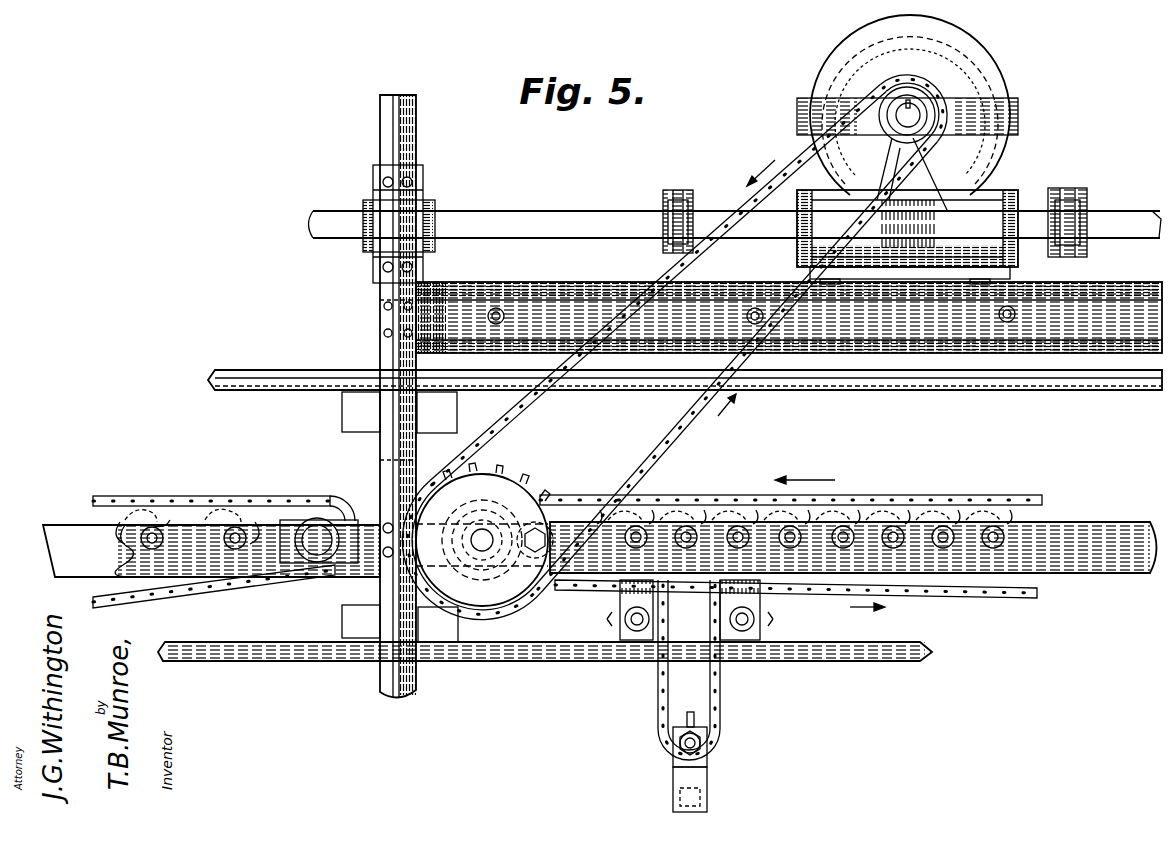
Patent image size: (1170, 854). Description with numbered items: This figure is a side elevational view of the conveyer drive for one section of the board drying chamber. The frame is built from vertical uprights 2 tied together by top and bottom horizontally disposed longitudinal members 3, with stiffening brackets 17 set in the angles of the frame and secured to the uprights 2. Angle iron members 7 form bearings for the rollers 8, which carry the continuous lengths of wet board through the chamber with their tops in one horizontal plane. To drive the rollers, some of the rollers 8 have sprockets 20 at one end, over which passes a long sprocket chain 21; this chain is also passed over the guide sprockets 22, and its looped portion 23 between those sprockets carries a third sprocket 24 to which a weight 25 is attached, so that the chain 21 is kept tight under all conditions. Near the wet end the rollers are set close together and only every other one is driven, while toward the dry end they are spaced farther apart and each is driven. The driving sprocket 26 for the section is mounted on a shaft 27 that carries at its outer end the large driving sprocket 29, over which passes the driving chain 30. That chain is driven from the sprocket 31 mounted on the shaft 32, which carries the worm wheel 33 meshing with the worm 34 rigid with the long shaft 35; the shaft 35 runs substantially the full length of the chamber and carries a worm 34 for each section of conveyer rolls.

The uprights 2 is at (392, 115).
The top and bottom horizontally disposed longitudinal members 3 is at (253, 389).
The angle iron members 7 is at (58, 526).
The rollers 8 is at (148, 524).
The stiffening brackets 17 is at (350, 410).
The sprockets 20 is at (226, 506).
The sprocket chain 21 is at (100, 494).
The guide sprockets 22 is at (614, 617).
The looped portion 23 is at (658, 692).
The third sprocket 24 is at (696, 721).
The weight 25 is at (710, 786).
The driving sprocket 26 is at (548, 508).
The shaft 27 is at (482, 530).
The large driving sprocket 29 is at (514, 472).
The driving chain 30 is at (885, 98).
The sprocket 31 is at (887, 138).
The shaft 32 is at (912, 112).
The worm wheel 33 is at (813, 76).
The worm 34 is at (950, 222).
The shaft 35 is at (337, 215).